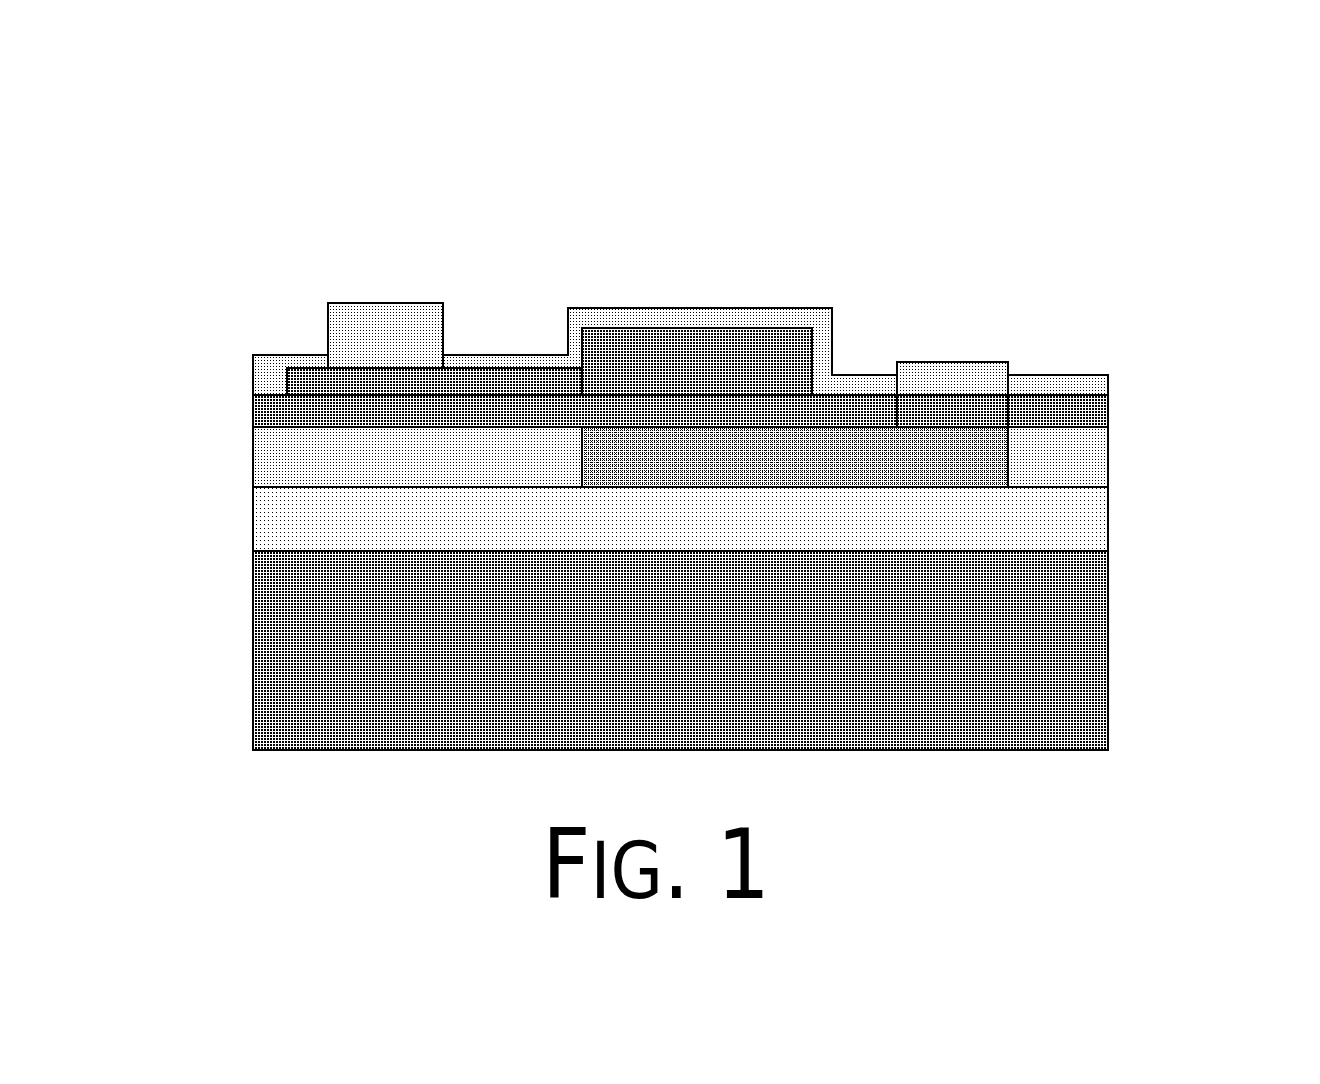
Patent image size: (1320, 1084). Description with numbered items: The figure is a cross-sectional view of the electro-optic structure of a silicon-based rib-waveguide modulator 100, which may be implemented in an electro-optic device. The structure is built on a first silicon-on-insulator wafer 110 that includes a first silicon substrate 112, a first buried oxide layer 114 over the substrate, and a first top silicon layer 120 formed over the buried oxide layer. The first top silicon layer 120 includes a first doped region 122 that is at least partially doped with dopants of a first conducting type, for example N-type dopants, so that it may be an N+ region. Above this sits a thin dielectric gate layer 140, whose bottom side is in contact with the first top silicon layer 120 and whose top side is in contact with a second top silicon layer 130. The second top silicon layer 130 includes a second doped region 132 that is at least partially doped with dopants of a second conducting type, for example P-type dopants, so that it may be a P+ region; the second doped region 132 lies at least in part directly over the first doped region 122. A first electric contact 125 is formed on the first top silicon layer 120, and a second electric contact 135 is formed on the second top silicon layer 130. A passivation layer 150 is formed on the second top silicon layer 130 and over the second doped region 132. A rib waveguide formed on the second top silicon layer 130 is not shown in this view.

The silicon-based rib-waveguide modulator 100 is at (577, 135).
The first silicon-on-insulator (SOI) wafer 110 is at (233, 433).
The first silicon substrate 112 is at (1008, 647).
The first buried oxide (BOX) layer 114 is at (1047, 525).
The first top silicon layer 120 is at (1053, 462).
The first doped region 122 is at (982, 465).
The first electric contact 125 is at (957, 388).
The second top silicon layer 130 is at (287, 383).
The second doped region 132 is at (812, 363).
The second electric contact 135 is at (387, 330).
The thin dielectric gate layer 140 is at (1107, 397).
The passivation layer 150 is at (652, 308).